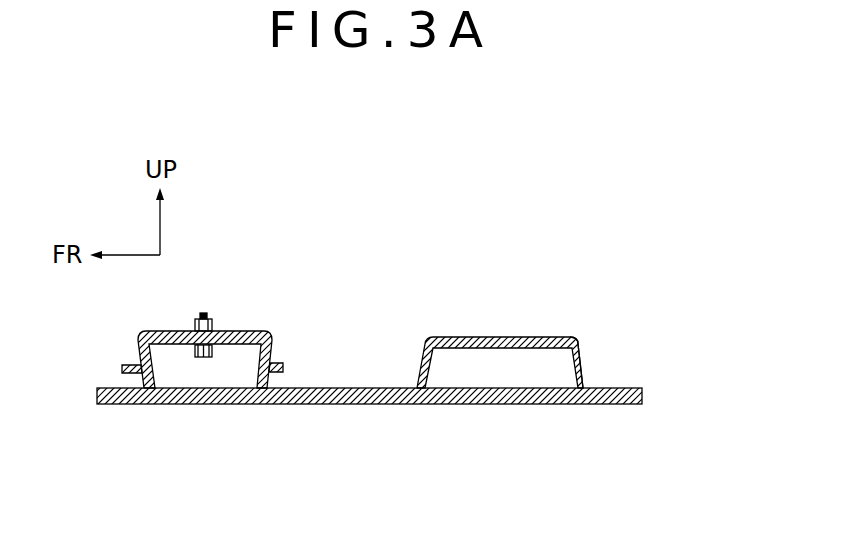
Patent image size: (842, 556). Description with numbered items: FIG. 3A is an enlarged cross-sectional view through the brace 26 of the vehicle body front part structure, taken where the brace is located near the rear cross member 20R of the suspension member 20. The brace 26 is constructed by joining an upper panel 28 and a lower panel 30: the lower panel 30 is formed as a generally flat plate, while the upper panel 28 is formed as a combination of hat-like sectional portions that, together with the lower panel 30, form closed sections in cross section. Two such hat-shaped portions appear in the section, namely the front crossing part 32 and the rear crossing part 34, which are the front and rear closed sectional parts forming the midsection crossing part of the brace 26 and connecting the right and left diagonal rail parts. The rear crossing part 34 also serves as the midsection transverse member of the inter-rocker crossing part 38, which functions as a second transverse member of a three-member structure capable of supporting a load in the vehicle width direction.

The rear cross member 20R is at (262, 328).
The suspension member 20 is at (264, 309).
The brace 26 is at (549, 254).
The upper panel 28 is at (578, 338).
The lower panel 30 is at (610, 405).
The front crossing part 32 is at (264, 300).
The rear crossing part 34 is at (517, 338).
The inter-rocker crossing part 38 is at (514, 314).